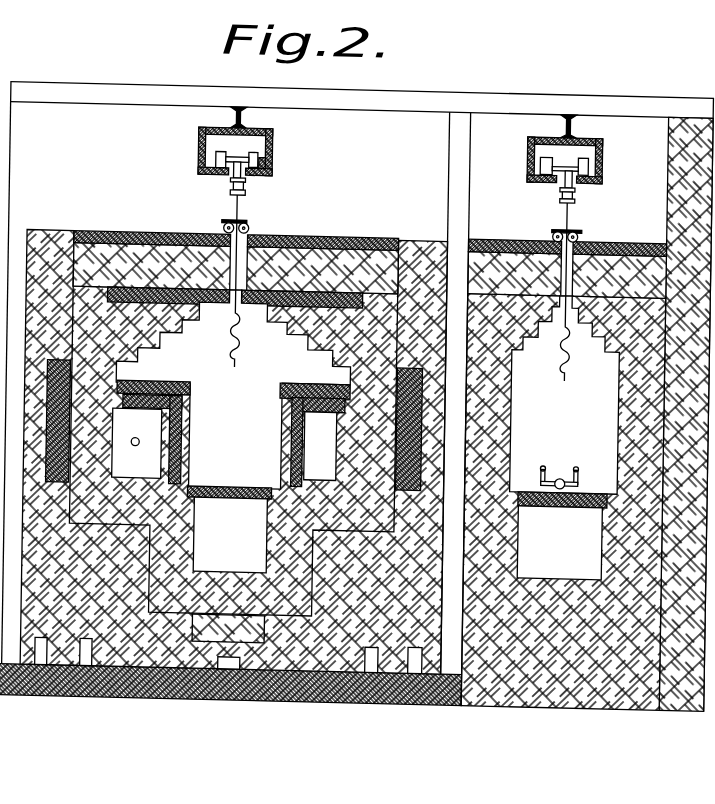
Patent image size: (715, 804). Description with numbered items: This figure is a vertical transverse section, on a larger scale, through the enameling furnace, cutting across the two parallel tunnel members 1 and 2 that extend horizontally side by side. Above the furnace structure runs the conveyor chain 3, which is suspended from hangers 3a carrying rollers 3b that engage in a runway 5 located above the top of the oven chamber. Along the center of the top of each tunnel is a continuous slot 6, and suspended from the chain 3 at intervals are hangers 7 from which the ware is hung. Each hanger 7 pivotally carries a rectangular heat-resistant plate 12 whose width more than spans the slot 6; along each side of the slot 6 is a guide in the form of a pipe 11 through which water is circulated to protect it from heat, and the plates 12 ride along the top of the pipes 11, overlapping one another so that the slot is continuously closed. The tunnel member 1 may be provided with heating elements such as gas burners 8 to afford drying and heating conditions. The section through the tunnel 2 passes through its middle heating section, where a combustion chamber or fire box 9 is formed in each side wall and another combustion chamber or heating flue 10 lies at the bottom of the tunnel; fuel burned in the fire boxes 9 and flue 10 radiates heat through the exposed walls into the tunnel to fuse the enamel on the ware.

The tunnel member 1 is at (565, 395).
The tunnel member 2 is at (233, 389).
The conveyor chain 3 is at (242, 191).
The hanger 3a is at (233, 171).
The roller 3b is at (255, 156).
The runway 5 is at (269, 163).
The slot 6 is at (247, 246).
The hanger 7 is at (231, 316).
The gas burner 8 is at (565, 473).
The fire box 9 is at (224, 444).
The heating flue 10 is at (230, 535).
The pipe 11 is at (220, 230).
The plate 12 is at (224, 222).